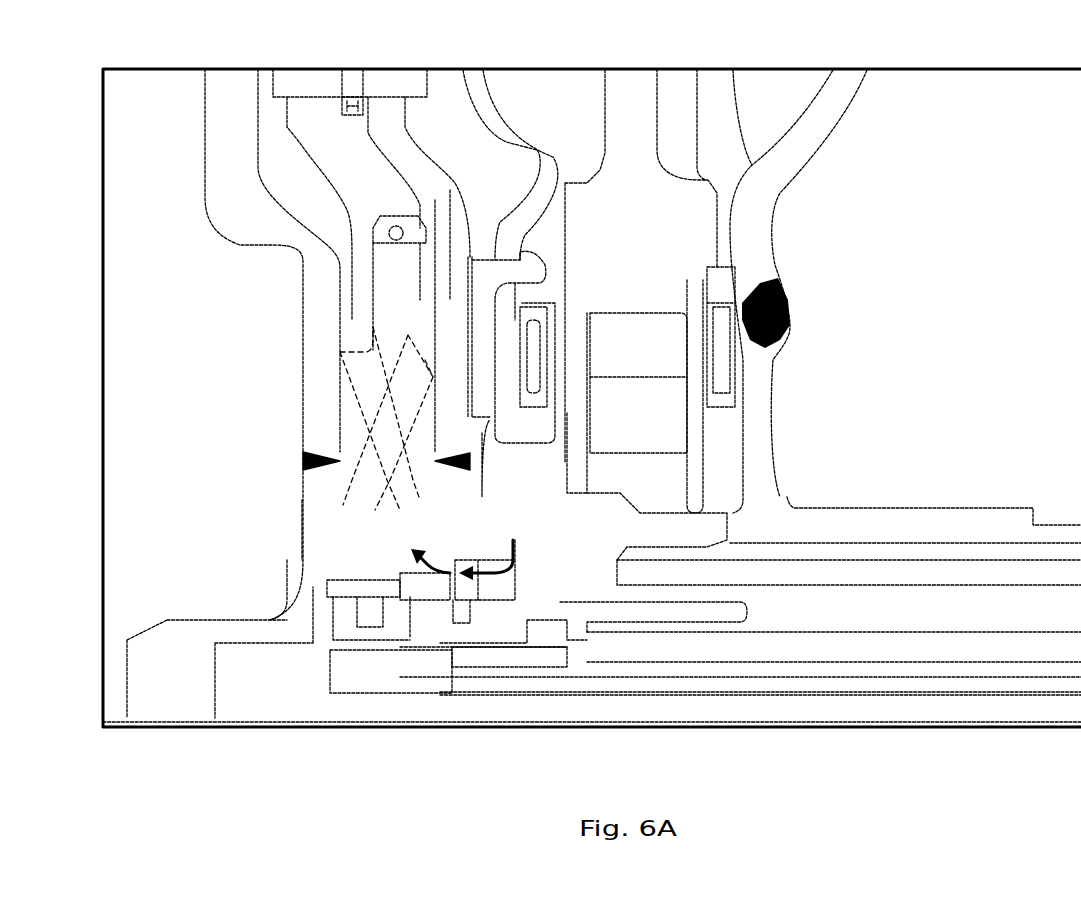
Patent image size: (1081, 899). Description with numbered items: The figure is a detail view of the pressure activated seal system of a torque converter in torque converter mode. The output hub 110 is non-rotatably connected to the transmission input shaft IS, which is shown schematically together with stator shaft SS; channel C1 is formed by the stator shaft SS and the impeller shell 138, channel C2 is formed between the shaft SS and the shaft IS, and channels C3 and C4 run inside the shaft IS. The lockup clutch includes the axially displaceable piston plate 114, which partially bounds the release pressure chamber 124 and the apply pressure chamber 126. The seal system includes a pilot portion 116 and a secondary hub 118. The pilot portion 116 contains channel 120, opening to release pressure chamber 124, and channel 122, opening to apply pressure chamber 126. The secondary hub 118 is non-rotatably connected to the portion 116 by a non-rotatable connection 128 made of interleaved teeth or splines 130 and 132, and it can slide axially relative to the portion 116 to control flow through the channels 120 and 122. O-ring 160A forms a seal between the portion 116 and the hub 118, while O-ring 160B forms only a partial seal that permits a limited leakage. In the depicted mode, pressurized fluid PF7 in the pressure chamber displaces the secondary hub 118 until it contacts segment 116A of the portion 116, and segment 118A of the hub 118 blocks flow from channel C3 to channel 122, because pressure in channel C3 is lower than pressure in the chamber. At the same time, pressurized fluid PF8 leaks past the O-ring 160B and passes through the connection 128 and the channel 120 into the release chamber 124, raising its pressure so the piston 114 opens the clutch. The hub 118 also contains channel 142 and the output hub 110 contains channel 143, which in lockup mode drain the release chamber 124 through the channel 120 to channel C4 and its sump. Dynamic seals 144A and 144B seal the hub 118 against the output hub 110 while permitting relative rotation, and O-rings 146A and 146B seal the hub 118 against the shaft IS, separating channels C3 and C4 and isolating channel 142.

The output hub 110 is at (710, 633).
The piston plate 114 is at (317, 153).
The pilot portion 116 is at (300, 480).
The segment of pilot portion 116A is at (353, 524).
The secondary hub 118 is at (333, 598).
The segment of secondary hub 118A is at (320, 590).
The channel 120 is at (367, 377).
The channel 122 is at (360, 530).
The release pressure chamber 124 is at (275, 165).
The apply pressure chamber 126 is at (382, 178).
The non-rotatable connection 128 is at (445, 556).
The teeth or splines 130 is at (492, 560).
The teeth or splines 132 is at (468, 560).
The impeller shell 138 is at (904, 291).
The channel 142 is at (392, 580).
The channel 143 is at (425, 627).
The dynamic seal 144A is at (375, 613).
The dynamic seal 144B is at (473, 611).
The O-ring 146A is at (360, 647).
The O-ring 146B is at (472, 647).
The O-ring 160A is at (390, 578).
The O-ring 160B is at (433, 550).
The pressurized fluid PF7 is at (513, 550).
The pressurized fluid PF8 is at (472, 612).
The channel C1 is at (963, 553).
The channel C2 is at (900, 580).
The channel C3 is at (1027, 703).
The channel C4 is at (913, 670).
The input shaft IS is at (950, 683).
The stator shaft SS is at (1025, 570).